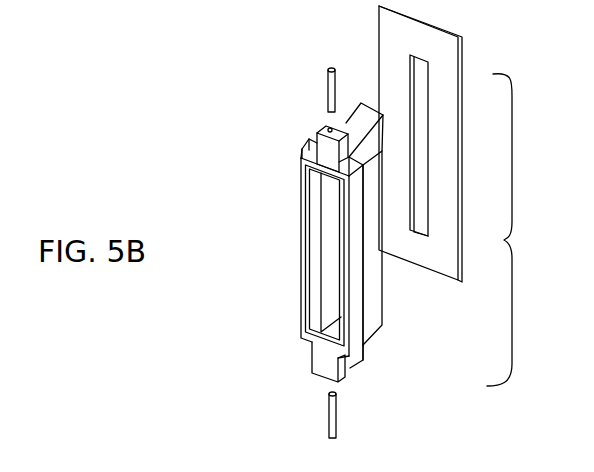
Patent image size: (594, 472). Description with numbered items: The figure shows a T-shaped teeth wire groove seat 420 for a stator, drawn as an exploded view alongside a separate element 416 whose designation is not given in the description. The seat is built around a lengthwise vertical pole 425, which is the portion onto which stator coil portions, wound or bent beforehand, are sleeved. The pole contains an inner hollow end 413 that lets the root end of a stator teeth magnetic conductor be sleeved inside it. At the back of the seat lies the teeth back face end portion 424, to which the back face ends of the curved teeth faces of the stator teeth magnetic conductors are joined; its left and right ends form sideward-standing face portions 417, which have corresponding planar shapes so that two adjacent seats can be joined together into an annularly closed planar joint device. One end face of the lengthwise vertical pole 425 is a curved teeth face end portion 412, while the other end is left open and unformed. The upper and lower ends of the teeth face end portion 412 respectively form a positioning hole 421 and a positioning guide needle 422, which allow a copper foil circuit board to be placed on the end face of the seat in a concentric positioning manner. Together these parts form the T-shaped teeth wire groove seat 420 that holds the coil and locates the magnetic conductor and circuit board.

The curved teeth face end portion 412 is at (322, 358).
The inner hollow end 413 is at (328, 240).
The mounting plate 416 is at (394, 66).
The sideward-standing face portion 417 is at (302, 158).
The T-shaped teeth wire groove seat 420 is at (522, 230).
The positioning hole 421 is at (332, 130).
The positioning guide needle 422 is at (330, 88).
The teeth back face end portion 424 is at (313, 312).
The lengthwise vertical pole 425 is at (370, 302).